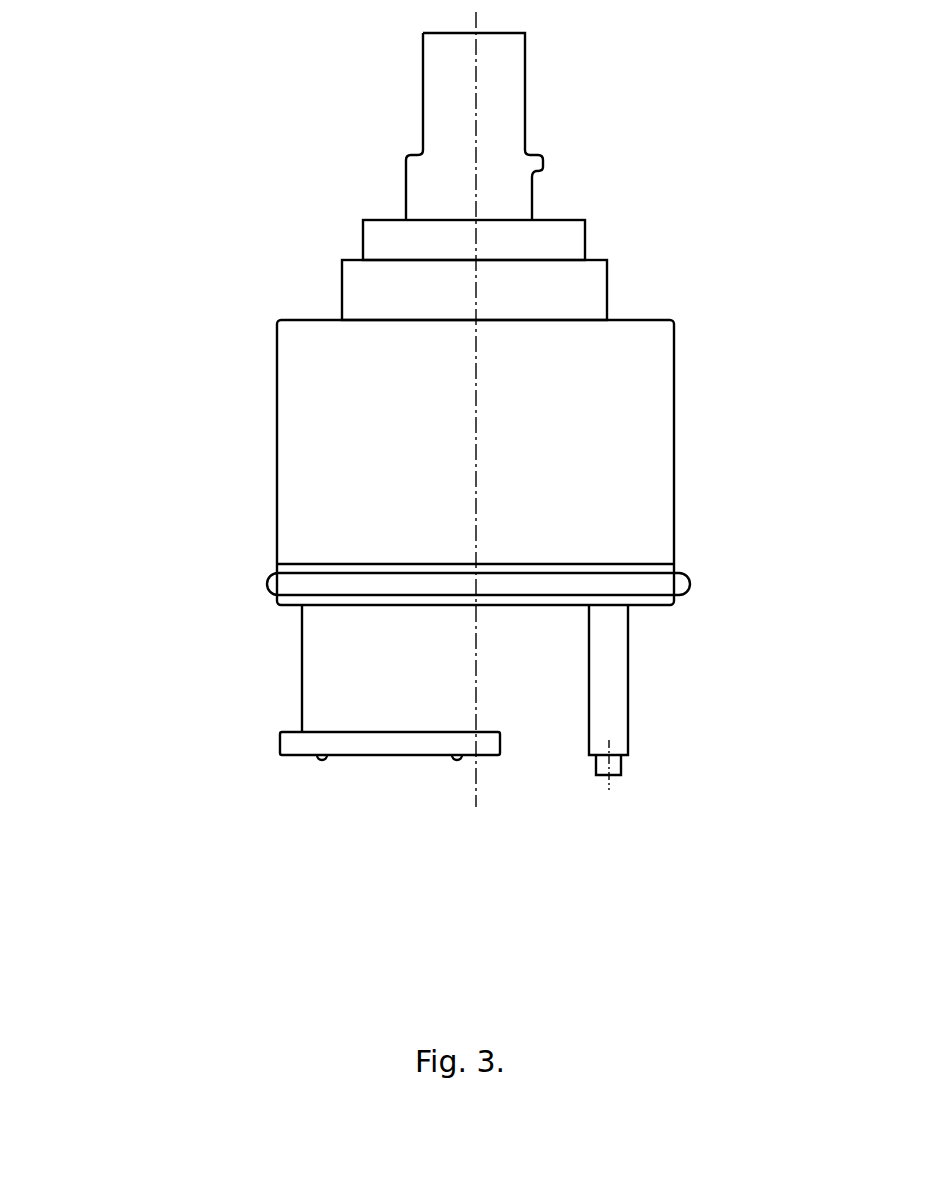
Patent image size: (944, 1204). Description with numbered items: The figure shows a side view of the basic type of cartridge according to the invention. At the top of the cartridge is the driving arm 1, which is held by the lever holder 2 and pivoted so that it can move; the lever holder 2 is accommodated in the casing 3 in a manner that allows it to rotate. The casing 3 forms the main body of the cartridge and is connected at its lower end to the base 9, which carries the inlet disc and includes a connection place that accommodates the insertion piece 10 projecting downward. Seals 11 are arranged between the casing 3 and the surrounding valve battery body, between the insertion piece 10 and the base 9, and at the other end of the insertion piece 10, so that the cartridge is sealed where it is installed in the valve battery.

The driving arm 1 is at (428, 189).
The lever holder 2 is at (447, 240).
The casing 3 is at (277, 340).
The base 9 is at (445, 630).
The insertion piece 10 is at (485, 747).
The seals 11 is at (310, 752).